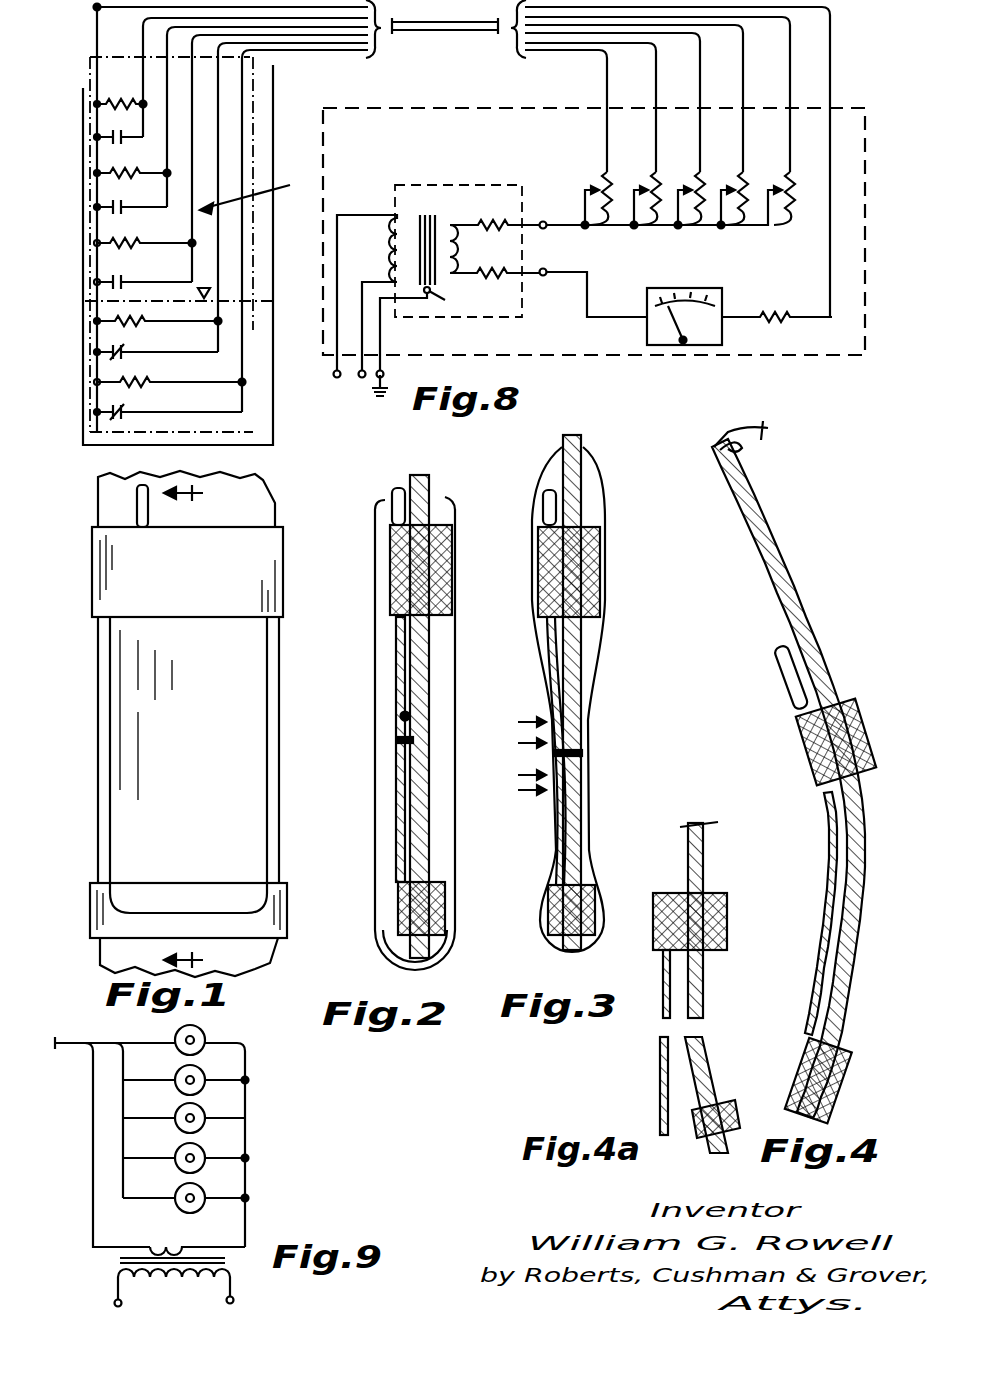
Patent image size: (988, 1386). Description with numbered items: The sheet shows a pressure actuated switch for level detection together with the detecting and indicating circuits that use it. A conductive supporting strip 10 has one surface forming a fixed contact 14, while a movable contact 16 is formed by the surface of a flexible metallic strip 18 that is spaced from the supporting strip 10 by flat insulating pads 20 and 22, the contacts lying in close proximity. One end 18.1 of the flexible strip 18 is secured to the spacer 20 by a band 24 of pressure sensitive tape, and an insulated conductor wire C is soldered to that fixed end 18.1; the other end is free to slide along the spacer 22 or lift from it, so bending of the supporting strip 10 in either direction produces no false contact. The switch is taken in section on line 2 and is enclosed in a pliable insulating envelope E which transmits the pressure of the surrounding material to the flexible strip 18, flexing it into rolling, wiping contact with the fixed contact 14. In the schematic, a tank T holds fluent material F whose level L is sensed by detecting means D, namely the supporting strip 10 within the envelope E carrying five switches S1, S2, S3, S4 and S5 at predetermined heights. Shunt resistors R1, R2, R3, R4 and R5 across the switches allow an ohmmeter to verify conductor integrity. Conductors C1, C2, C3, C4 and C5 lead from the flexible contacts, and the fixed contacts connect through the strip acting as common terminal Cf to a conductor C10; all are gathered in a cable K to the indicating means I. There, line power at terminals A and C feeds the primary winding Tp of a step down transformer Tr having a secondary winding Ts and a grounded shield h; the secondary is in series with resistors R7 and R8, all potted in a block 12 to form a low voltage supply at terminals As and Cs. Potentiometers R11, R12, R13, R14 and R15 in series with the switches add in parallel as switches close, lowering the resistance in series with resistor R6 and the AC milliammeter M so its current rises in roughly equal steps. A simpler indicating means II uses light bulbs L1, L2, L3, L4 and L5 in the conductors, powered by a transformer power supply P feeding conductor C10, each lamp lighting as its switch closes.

In FIG. 8, the supporting strip 10 is at (92, 48).
In FIG. 1, the supporting strip 10 is at (98, 866).
In FIG. 2, the supporting strip 10 is at (431, 483).
In FIG. 3, the supporting strip 10 is at (582, 449).
In FIG. 4A, the supporting strip 10 is at (707, 1093).
In FIG. 4, the supporting strip 10 is at (750, 516).
In FIG. 8, the block 12 is at (510, 192).
In FIG. 8, the fixed contact 14 is at (103, 280).
In FIG. 2, the fixed contact 14 is at (405, 742).
In FIG. 3, the fixed contact 14 is at (580, 753).
In FIG. 8, the movable contact 16 is at (132, 290).
In FIG. 2, the movable contact 16 is at (410, 716).
In FIG. 3, the movable contact 16 is at (557, 756).
In FIG. 1, the flexible metallic strip 18 is at (208, 811).
In FIG. 2, the flexible metallic strip 18 is at (397, 800).
In FIG. 3, the flexible metallic strip 18 is at (549, 639).
In FIG. 4A, the flexible metallic strip 18 is at (660, 1066).
In FIG. 4, the flexible metallic strip 18 is at (822, 963).
In FIG. 2, the fixed end of flexible strip 18.1 is at (400, 622).
In FIG. 2, the insulating pad (spacer) 20 is at (405, 673).
In FIG. 4A, the insulating pad (spacer) 20 is at (703, 889).
In FIG. 4, the insulating pad (spacer) 20 is at (862, 800).
In FIG. 1, the insulating pad (spacer) 22 is at (287, 926).
In FIG. 2, the insulating pad (spacer) 22 is at (398, 941).
In FIG. 3, the insulating pad (spacer) 22 is at (571, 910).
In FIG. 4A, the insulating pad (spacer) 22 is at (700, 1139).
In FIG. 4, the insulating pad (spacer) 22 is at (835, 1054).
In FIG. 1, the band (securing means) 24 is at (212, 576).
In FIG. 2, the band (securing means) 24 is at (392, 598).
In FIG. 3, the band (securing means) 24 is at (600, 586).
In FIG. 4A, the band (securing means) 24 is at (727, 921).
In FIG. 4, the band (securing means) 24 is at (848, 706).
In FIG. 8, the section line 2— 2 is at (113, 352).
In FIG. 1, the section line 2— 2 is at (191, 727).
In FIG. 8, the conductor wire C is at (368, 386).
In FIG. 1, the conductor wire C is at (137, 510).
In FIG. 2, the conductor wire C is at (393, 500).
In FIG. 3, the conductor wire C is at (545, 510).
In FIG. 4, the conductor wire C is at (784, 693).
In FIG. 9, the conductor wire C is at (253, 1314).
In FIG. 4, the common terminal Cf is at (768, 440).
In FIG. 8, the envelope E is at (90, 73).
In FIG. 2, the envelope E is at (456, 826).
In FIG. 3, the envelope E is at (603, 492).
In FIG. 8, the tank T is at (273, 72).
In FIG. 8, the fluent material F is at (273, 440).
In FIG. 8, the detecting means D is at (251, 194).
In FIG. 8, the level L is at (204, 279).
In FIG. 8, the common cable K is at (462, 33).
In FIG. 8, the indicating means I is at (484, 104).
In FIG. 9, the indicating means (lamp arrangement) II is at (258, 1131).
In FIG. 8, the AC milliammeter M is at (647, 292).
In FIG. 8, the terminal A is at (332, 386).
In FIG. 9, the terminal A is at (88, 1306).
In FIG. 9, the transformer power supply P is at (180, 1283).
In FIG. 8, the grounded conductive shield h is at (418, 341).
In FIG. 8, the primary winding Tp is at (400, 218).
In FIG. 8, the step down transformer Tr is at (427, 207).
In FIG. 8, the secondary winding Ts is at (455, 222).
In FIG. 8, the output terminal As is at (657, 209).
In FIG. 8, the output terminal Cs is at (590, 293).
In FIG. 8, the shunt resistor R1 is at (172, 383).
In FIG. 8, the shunt resistor R2 is at (140, 322).
In FIG. 8, the shunt resistor R3 is at (145, 251).
In FIG. 8, the shunt resistor R4 is at (125, 173).
In FIG. 8, the shunt resistor R5 is at (120, 88).
In FIG. 8, the resistor R6 is at (808, 299).
In FIG. 8, the resistor R7 is at (494, 214).
In FIG. 8, the resistor R8 is at (494, 262).
In FIG. 8, the potentiometer R11 is at (578, 220).
In FIG. 8, the potentiometer R12 is at (630, 220).
In FIG. 8, the potentiometer R13 is at (686, 220).
In FIG. 8, the potentiometer R14 is at (742, 220).
In FIG. 8, the potentiometer R15 is at (802, 228).
In FIG. 8, the conductor C1 is at (607, 72).
In FIG. 8, the conductor C2 is at (656, 70).
In FIG. 8, the conductor C3 is at (700, 70).
In FIG. 8, the conductor C4 is at (743, 70).
In FIG. 8, the conductor C5 is at (790, 70).
In FIG. 8, the common conductor C10 is at (96, 10).
In FIG. 9, the common conductor C10 is at (93, 1177).
In FIG. 8, the pressure actuated switch S1 is at (113, 410).
In FIG. 8, the pressure actuated switch S2 is at (130, 192).
In FIG. 8, the pressure actuated switch S3 is at (112, 300).
In FIG. 8, the pressure actuated switch S4 is at (110, 220).
In FIG. 8, the pressure actuated switch S5 is at (112, 142).
In FIG. 9, the light bulb L1 is at (184, 1035).
In FIG. 9, the light bulb L2 is at (185, 1073).
In FIG. 9, the light bulb L3 is at (185, 1111).
In FIG. 9, the light bulb L4 is at (185, 1150).
In FIG. 9, the light bulb L5 is at (185, 1190).